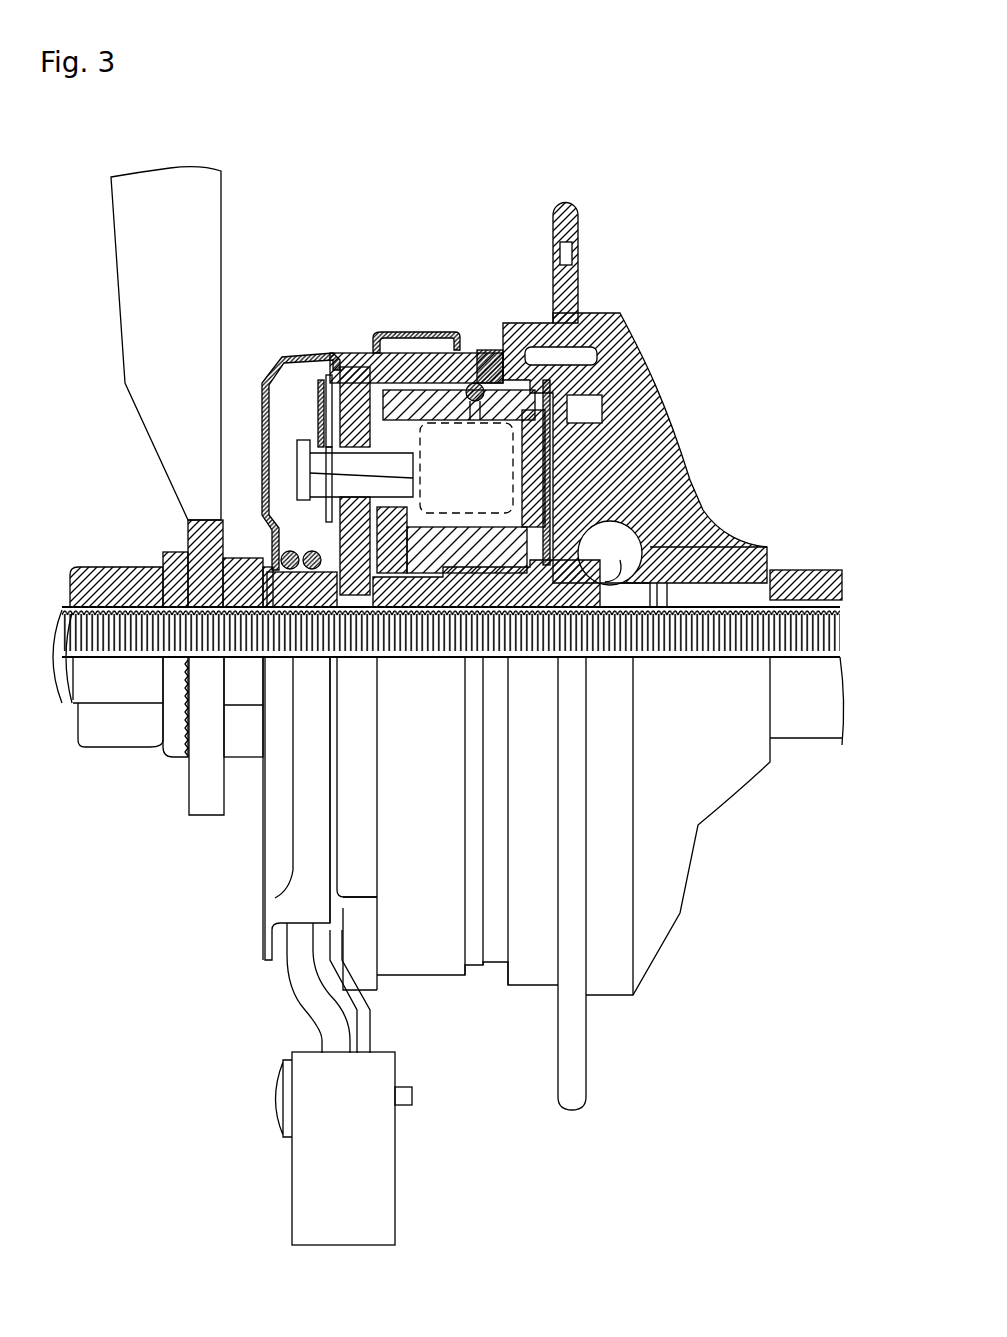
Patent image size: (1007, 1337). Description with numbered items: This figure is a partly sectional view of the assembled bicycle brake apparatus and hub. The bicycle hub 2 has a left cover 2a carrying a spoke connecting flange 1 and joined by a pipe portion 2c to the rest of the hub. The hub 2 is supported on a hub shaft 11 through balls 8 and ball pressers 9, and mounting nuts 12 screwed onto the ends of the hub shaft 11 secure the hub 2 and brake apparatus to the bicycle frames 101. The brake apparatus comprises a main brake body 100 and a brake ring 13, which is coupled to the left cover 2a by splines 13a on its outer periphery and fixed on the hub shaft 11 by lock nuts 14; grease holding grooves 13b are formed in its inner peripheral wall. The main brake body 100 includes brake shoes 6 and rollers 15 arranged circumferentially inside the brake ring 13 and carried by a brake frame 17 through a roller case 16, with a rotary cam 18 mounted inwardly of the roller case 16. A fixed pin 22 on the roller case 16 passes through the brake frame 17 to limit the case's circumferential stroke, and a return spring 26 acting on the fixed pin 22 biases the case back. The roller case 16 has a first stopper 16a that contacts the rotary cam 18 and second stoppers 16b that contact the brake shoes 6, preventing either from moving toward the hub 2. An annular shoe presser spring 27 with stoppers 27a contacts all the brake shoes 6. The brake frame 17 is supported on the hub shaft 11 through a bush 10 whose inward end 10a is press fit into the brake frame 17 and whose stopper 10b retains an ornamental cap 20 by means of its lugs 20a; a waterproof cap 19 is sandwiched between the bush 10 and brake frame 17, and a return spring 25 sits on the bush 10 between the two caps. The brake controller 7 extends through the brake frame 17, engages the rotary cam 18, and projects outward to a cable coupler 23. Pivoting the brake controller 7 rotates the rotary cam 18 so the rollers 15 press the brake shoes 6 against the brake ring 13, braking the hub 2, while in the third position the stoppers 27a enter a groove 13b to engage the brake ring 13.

The spoke connecting flange 1 is at (580, 207).
The bicycle hub 2 is at (703, 828).
The left cover 2a is at (640, 360).
The pipe portion 2c is at (812, 727).
The brake shoes 6 is at (388, 343).
The brake controller 7 is at (287, 982).
The balls 8 is at (640, 560).
The ball pressers 9 is at (580, 600).
The bush 10 is at (163, 563).
The inward end 10a is at (360, 660).
The stopper 10b is at (262, 558).
The hub shaft 11 is at (737, 643).
The mounting nuts 12 is at (118, 740).
The brake ring 13 is at (432, 333).
The splines 13a is at (577, 353).
The grease holding grooves 13b is at (407, 333).
The lock nuts 14 is at (250, 750).
The rollers 15 is at (297, 470).
The roller case 16 is at (560, 463).
The first stopper 16a is at (640, 543).
The second stoppers 16b is at (603, 420).
The brake frame 17 is at (352, 350).
The rotary cam 18 is at (433, 657).
The waterproof cap 19 is at (333, 363).
The ornamental cap 20 is at (277, 353).
The lugs 20a is at (300, 660).
The fixed pin 22 is at (303, 443).
The cable coupler 23 is at (298, 1160).
The return spring 25 is at (360, 1023).
The return spring 26 is at (315, 400).
The shoe presser spring 27 is at (473, 410).
The stoppers 27a is at (467, 377).
The main brake body 100 is at (258, 895).
The bicycle frames 101 is at (118, 240).